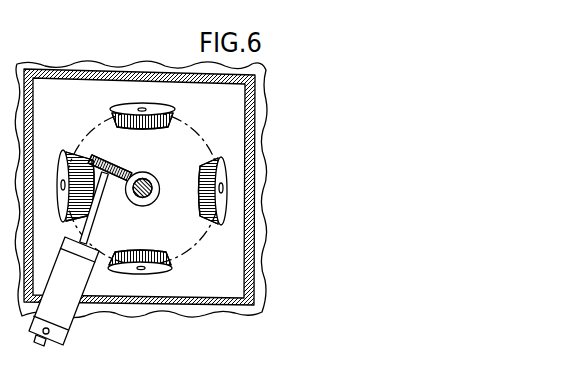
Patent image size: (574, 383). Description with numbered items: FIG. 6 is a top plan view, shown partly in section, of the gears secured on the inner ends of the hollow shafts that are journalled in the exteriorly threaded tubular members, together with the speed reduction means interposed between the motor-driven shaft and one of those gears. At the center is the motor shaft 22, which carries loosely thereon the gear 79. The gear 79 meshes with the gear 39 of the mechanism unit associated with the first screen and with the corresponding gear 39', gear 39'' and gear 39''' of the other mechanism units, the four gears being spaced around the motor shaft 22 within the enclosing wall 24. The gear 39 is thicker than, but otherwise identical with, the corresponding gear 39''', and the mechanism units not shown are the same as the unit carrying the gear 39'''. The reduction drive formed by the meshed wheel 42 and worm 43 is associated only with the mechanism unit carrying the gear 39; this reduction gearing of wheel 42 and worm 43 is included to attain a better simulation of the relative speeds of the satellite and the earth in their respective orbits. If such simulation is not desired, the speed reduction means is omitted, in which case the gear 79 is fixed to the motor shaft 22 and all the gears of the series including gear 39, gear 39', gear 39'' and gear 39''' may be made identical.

The motor shaft 22 is at (145, 206).
The housing wall 24 is at (259, 145).
The gear 39 is at (65, 167).
The gear 39' is at (154, 107).
The gear 39'' is at (215, 212).
The gear 39''' is at (162, 273).
The wheel 42 is at (112, 170).
The worm 43 is at (150, 180).
The gear 79 is at (210, 157).